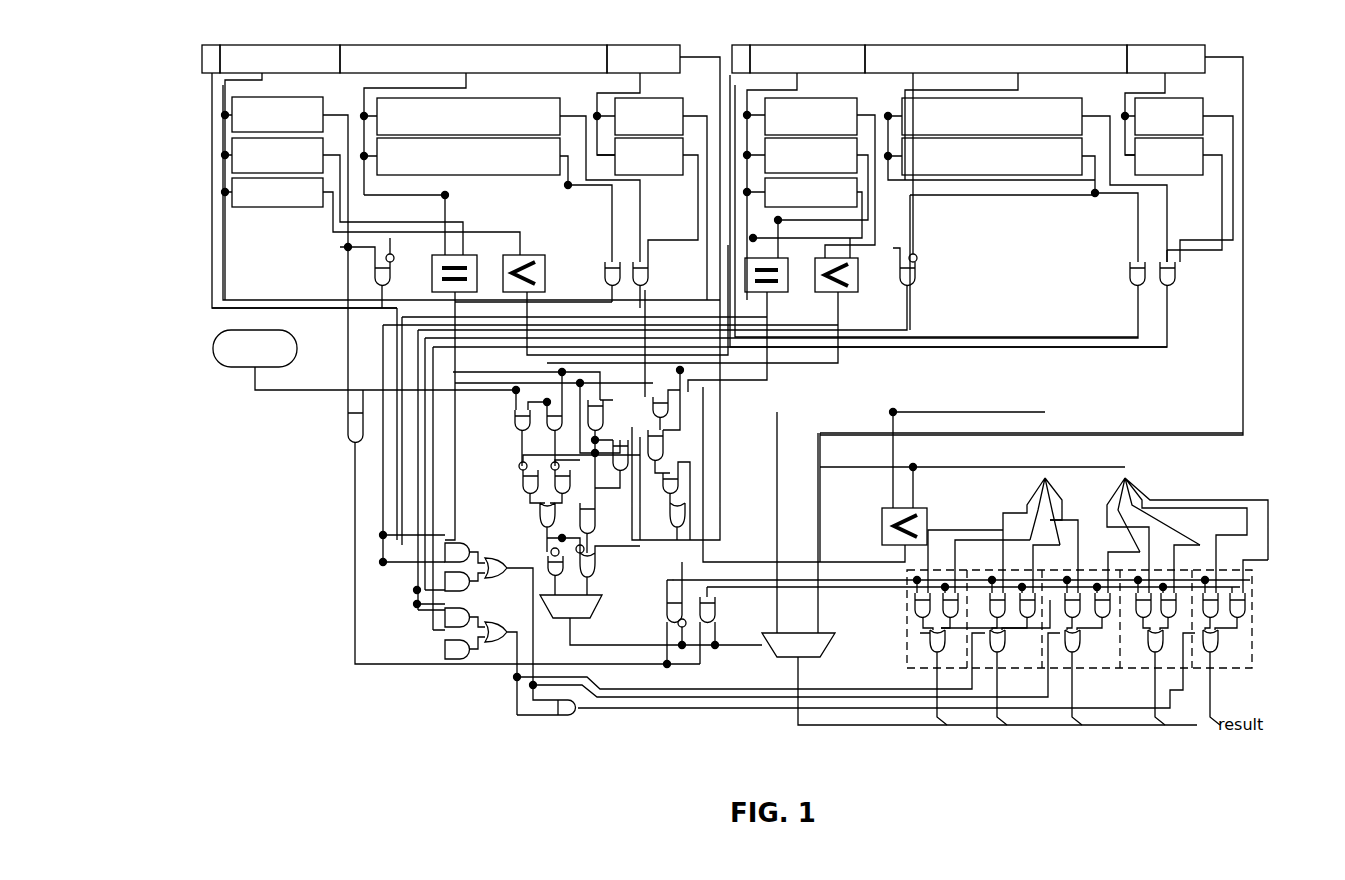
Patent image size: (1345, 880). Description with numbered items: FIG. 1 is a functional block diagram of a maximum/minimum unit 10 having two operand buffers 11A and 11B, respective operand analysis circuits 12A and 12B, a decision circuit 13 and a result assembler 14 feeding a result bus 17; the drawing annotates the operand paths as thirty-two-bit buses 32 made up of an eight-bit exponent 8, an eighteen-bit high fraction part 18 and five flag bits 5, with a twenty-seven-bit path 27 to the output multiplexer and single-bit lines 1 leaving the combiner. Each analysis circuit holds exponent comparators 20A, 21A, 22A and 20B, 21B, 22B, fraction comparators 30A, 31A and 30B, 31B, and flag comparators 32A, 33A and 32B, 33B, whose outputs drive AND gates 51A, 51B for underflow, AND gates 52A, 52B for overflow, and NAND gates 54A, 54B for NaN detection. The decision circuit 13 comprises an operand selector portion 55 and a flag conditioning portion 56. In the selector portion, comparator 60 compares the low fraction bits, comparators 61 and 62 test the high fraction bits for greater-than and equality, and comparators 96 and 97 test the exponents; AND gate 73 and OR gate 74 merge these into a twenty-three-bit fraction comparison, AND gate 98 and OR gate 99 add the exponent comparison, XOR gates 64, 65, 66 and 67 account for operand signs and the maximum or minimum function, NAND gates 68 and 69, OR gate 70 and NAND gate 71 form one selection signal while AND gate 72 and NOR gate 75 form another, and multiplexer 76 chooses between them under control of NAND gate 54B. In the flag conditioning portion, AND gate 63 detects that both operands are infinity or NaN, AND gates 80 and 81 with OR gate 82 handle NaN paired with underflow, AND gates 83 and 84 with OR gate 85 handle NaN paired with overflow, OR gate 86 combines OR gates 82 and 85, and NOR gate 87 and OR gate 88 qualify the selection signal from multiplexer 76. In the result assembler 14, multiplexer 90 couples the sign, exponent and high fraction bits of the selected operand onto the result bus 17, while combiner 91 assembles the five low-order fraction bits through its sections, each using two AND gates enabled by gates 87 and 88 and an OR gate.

The maximum/minimum unit 10 is at (738, 742).
The operand buffer 11A is at (441, 48).
The operand buffer 11B is at (968, 48).
The operand analysis circuit 12A is at (340, 238).
The operand analysis circuit 12B is at (1085, 370).
The decision circuit 13 is at (352, 540).
The result assembler 14 is at (1200, 478).
The result bus 17 is at (1040, 728).
The fraction high part bit width 18 is at (455, 75).
The exponent bit width 8 is at (255, 76).
The flags bit width 5 is at (600, 102).
The operand bit width 32 is at (700, 67).
The partial operand bit width 27 is at (790, 450).
The single bit width 1 is at (1224, 688).
The comparator 20A is at (220, 104).
The comparator 21A is at (220, 144).
The comparator 22A is at (220, 184).
The comparator 20B is at (800, 92).
The comparator 21B is at (772, 157).
The comparator 22B is at (772, 197).
The comparator 30A is at (497, 85).
The comparator 31A is at (515, 175).
The comparator 32A is at (650, 92).
The comparator 33A is at (682, 186).
The comparator 30B is at (1033, 88).
The comparator 31B is at (990, 170).
The comparator 32B is at (1170, 92).
The comparator 33B is at (1170, 178).
The AND gate 51A is at (613, 267).
The AND gate 52A is at (678, 277).
The NAND gate 54A is at (368, 280).
The AND gate 51B is at (1131, 267).
The AND gate 52B is at (1206, 273).
The NAND gate 54B is at (946, 270).
The operand selector portion 55 is at (713, 553).
The flag conditioning portion 56 is at (450, 680).
The comparator 60 is at (896, 514).
The comparator 61 is at (535, 302).
The comparator 62 is at (438, 267).
The AND gate 63 is at (346, 437).
The XOR gate 64 is at (523, 424).
The XOR gate 65 is at (630, 422).
The XOR gate 66 is at (580, 440).
The XOR gate 67 is at (645, 472).
The NAND gate 68 is at (579, 479).
The NAND gate 69 is at (565, 481).
The OR gate 70 is at (545, 517).
The NAND gate 71 is at (555, 571).
The AND gate 72 is at (587, 528).
The AND gate 73 is at (662, 360).
The OR gate 74 is at (656, 428).
The NOR gate 75 is at (598, 565).
The multiplexer 76 is at (598, 605).
The AND gate 80 is at (465, 553).
The AND gate 81 is at (465, 581).
The OR gate 82 is at (495, 553).
The AND gate 83 is at (465, 617).
The AND gate 84 is at (465, 648).
The OR gate 85 is at (495, 618).
The OR gate 86 is at (570, 718).
The NOR gate 87 is at (668, 612).
The OR gate 88 is at (738, 612).
The multiplexer 90 is at (830, 645).
The combiner 91 is at (915, 668).
The comparator 96 is at (880, 306).
The comparator 97 is at (775, 298).
The AND gate 98 is at (676, 501).
The OR gate 99 is at (670, 518).